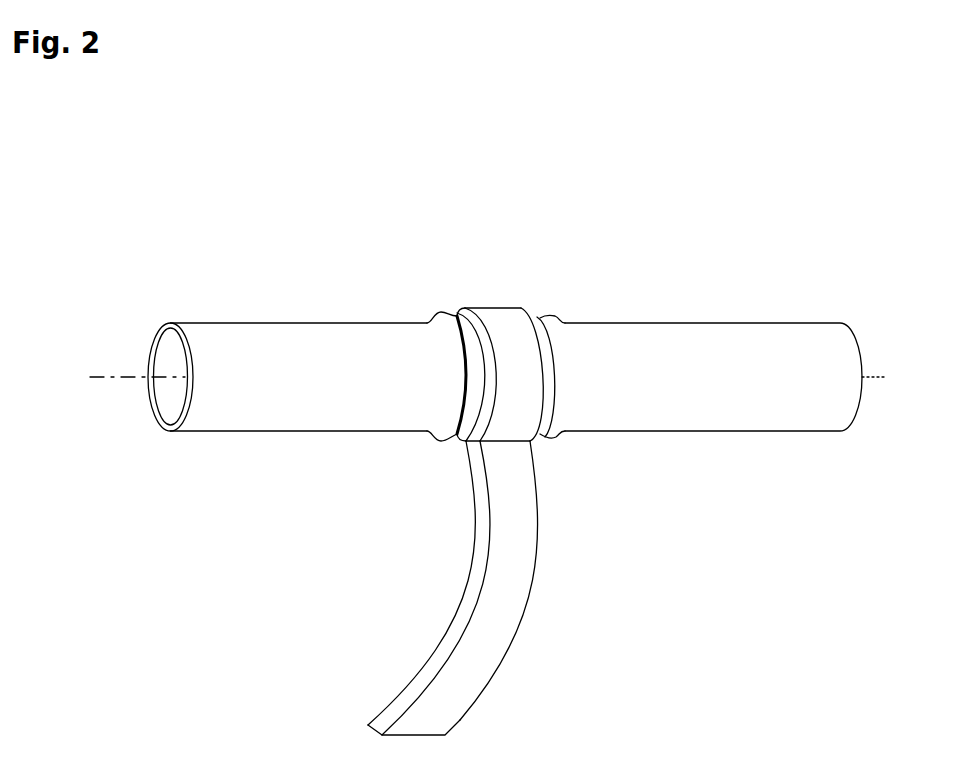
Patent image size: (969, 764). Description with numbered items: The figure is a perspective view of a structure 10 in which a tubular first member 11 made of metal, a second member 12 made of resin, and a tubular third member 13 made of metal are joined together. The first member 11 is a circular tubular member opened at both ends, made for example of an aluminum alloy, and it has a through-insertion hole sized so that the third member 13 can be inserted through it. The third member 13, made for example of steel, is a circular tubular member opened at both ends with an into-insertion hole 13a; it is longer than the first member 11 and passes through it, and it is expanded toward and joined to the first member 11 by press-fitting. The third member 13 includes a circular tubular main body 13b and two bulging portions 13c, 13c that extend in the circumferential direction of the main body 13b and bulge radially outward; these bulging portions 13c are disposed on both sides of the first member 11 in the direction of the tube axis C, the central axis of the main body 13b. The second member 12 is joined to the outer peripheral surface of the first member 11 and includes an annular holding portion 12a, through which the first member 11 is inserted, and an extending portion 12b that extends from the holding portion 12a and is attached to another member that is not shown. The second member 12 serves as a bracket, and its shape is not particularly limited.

The structure 10 is at (487, 434).
The first member 11 is at (463, 317).
The second member 12 is at (504, 465).
The holding portion 12a is at (498, 307).
The extending portion 12b is at (537, 507).
The third member 13 is at (485, 329).
The into-insertion hole 13a is at (165, 358).
The main body 13b is at (325, 340).
The bulging portion 13c is at (438, 313).
The tube axis C is at (487, 358).